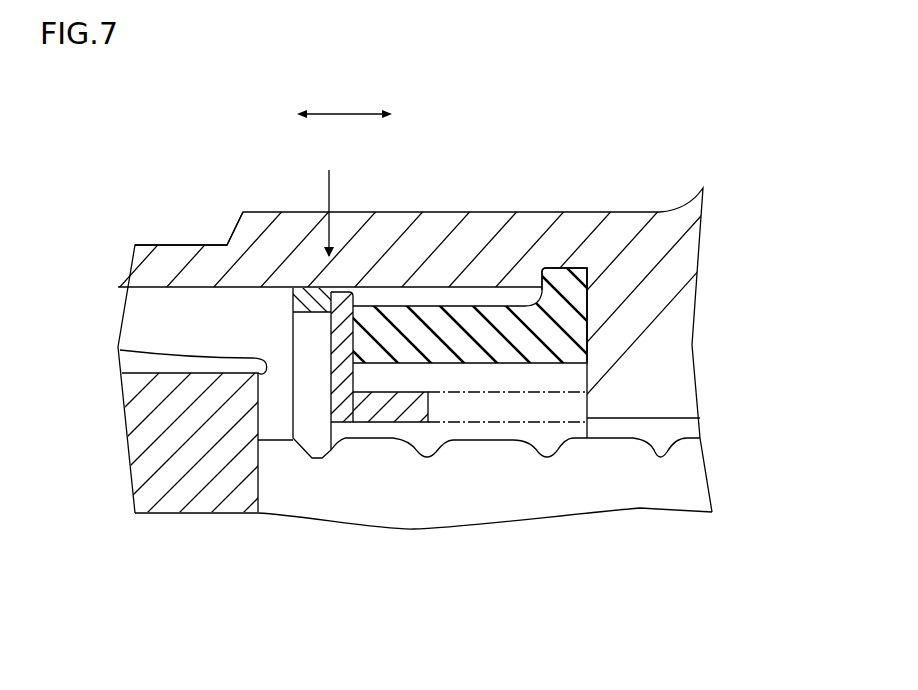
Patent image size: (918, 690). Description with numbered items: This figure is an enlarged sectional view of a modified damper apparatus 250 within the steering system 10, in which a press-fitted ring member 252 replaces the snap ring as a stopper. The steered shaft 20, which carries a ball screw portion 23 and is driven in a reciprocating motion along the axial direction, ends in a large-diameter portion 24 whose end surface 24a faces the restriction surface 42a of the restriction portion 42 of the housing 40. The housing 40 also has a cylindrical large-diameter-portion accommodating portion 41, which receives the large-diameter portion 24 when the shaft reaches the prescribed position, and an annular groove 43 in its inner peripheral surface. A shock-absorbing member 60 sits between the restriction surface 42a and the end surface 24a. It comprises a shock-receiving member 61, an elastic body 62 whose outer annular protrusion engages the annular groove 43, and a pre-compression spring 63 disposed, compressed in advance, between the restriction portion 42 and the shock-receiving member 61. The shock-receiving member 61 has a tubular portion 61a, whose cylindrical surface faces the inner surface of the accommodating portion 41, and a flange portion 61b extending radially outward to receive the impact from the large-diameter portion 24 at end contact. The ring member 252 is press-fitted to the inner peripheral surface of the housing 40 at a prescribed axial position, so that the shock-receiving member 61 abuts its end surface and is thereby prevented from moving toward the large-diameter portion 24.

The steering system 10 is at (149, 152).
The damper apparatus 250 is at (131, 210).
The housing 40 is at (611, 209).
The large-diameter-portion accommodating portion 41 is at (260, 272).
The restriction portion 42 is at (667, 366).
The restriction surface 42a is at (588, 313).
The annular groove 43 is at (567, 268).
The shock-absorbing member 60 is at (290, 348).
The ring member 252 is at (318, 308).
The elastic body 62 is at (435, 320).
The shock-receiving member 61 is at (435, 597).
The tubular portion 61a is at (395, 410).
The flange portion 61b is at (372, 357).
The pre-compression spring 63 is at (518, 413).
The steered shaft 20 is at (716, 453).
The ball screw portion 23 is at (640, 494).
The large-diameter portion 24 is at (167, 440).
The end surface 24a is at (120, 350).